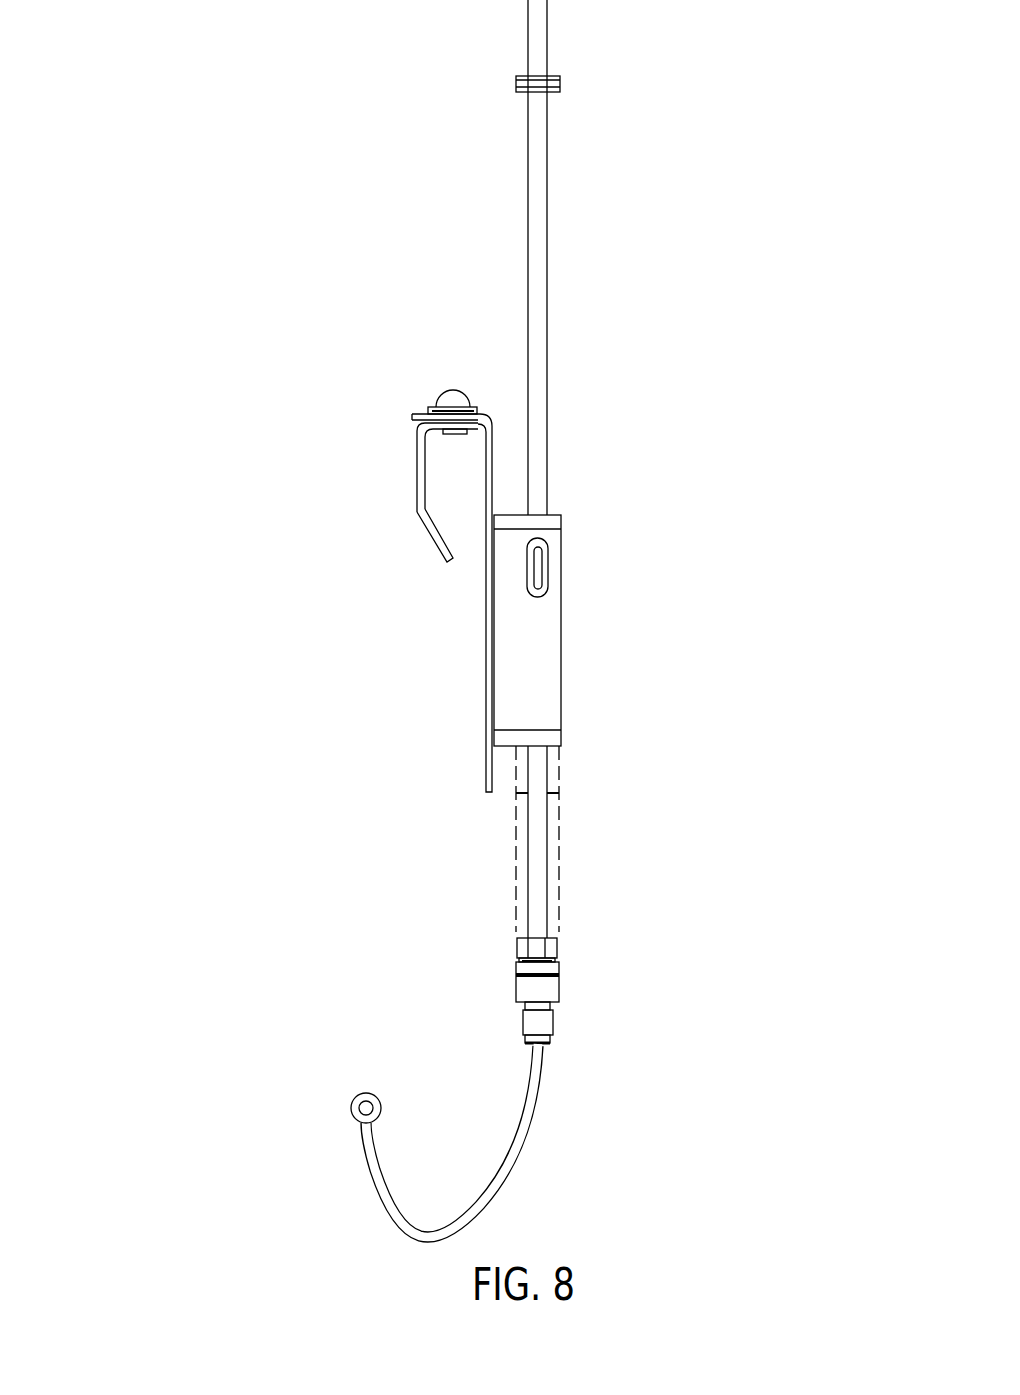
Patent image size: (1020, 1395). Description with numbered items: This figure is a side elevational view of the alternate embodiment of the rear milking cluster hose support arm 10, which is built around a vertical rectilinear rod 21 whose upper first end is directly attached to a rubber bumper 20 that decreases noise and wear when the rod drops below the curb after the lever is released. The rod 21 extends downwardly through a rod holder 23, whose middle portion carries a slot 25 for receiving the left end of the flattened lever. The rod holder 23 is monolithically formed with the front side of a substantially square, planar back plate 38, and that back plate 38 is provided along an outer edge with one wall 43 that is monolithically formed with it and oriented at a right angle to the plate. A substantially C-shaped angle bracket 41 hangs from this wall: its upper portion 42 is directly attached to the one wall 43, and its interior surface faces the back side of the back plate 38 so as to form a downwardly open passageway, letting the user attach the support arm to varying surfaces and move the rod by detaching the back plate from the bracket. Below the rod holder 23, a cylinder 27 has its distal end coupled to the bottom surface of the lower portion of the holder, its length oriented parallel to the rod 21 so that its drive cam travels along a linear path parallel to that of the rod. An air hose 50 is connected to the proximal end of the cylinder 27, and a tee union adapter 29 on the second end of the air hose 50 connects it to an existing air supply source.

The rear milking cluster hose support arm 10 is at (196, 164).
The rubber bumper 20 is at (560, 83).
The rectilinear rod 21 is at (538, 250).
The rod holder 23 is at (535, 628).
The slot 25 is at (541, 558).
The cylinder 27 is at (553, 853).
The tee union adapter 29 is at (366, 1092).
The back plate 38 is at (472, 628).
The angle bracket 41 is at (414, 468).
The upper portion 42 is at (422, 413).
The one wall 43 is at (478, 412).
The air hose 50 is at (512, 1165).